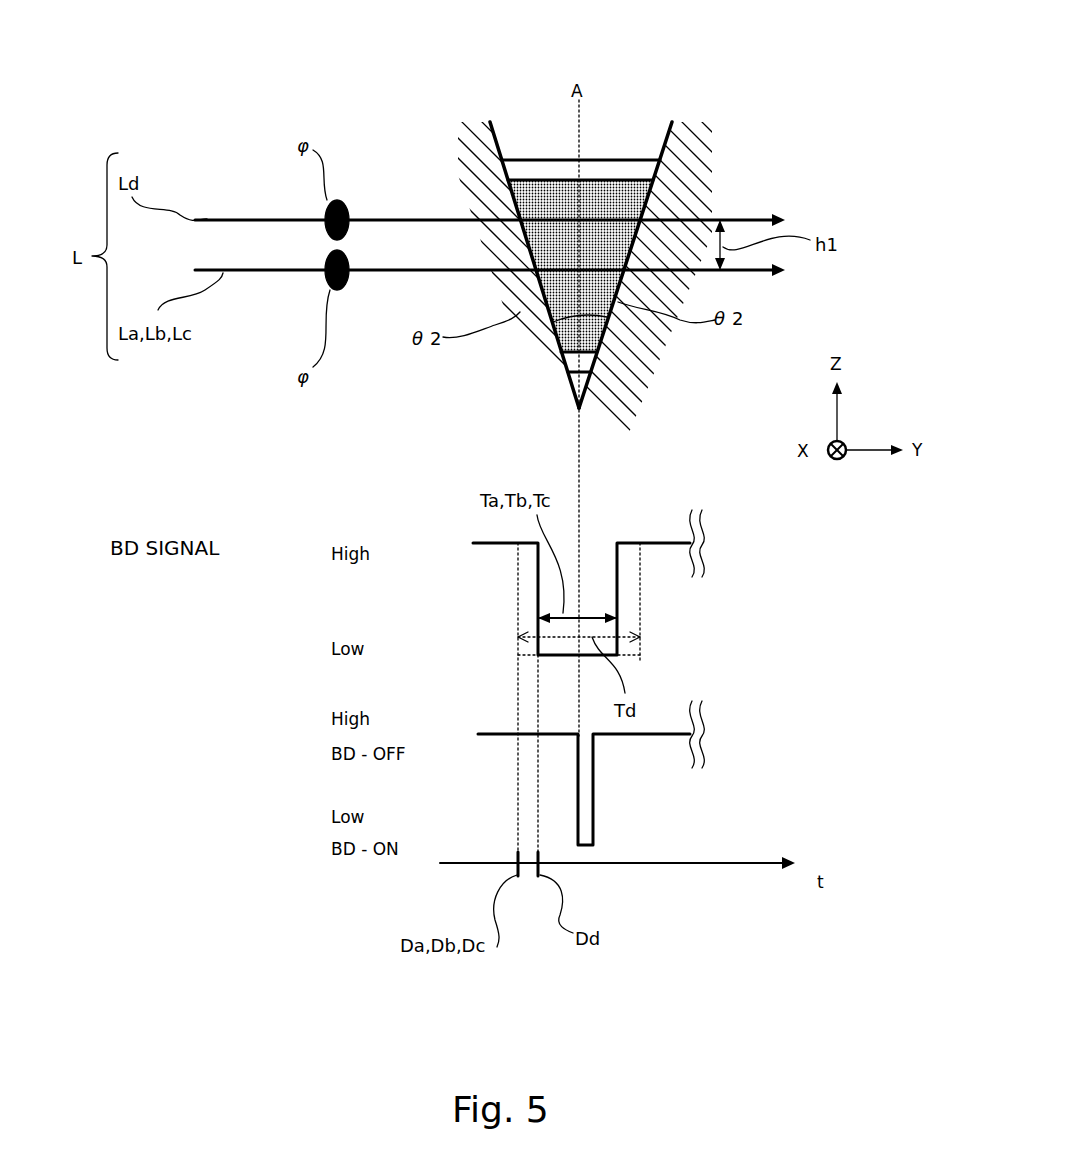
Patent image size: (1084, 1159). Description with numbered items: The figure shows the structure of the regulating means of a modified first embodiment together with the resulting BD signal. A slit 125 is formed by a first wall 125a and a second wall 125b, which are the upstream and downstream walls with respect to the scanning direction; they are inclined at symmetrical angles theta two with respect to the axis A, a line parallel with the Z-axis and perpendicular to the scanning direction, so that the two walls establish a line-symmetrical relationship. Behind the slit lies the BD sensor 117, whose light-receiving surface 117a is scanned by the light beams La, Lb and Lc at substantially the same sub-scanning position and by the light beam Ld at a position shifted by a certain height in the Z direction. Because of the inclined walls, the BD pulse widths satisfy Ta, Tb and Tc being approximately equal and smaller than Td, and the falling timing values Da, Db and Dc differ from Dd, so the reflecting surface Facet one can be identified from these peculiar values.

The BD sensor 117 is at (548, 143).
The light-receiving surface 117a is at (610, 197).
The slit 125 is at (625, 357).
The first wall 125a is at (505, 130).
The second wall 125b is at (660, 128).